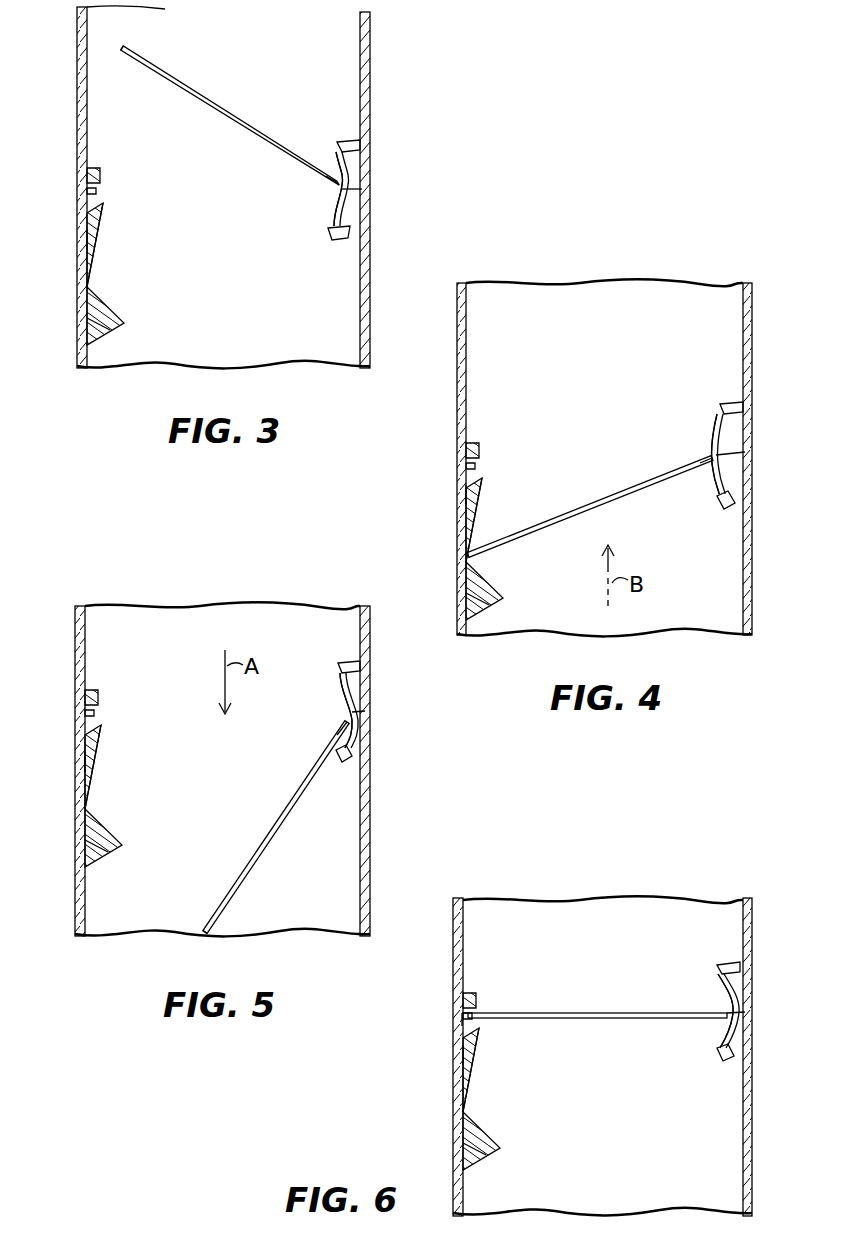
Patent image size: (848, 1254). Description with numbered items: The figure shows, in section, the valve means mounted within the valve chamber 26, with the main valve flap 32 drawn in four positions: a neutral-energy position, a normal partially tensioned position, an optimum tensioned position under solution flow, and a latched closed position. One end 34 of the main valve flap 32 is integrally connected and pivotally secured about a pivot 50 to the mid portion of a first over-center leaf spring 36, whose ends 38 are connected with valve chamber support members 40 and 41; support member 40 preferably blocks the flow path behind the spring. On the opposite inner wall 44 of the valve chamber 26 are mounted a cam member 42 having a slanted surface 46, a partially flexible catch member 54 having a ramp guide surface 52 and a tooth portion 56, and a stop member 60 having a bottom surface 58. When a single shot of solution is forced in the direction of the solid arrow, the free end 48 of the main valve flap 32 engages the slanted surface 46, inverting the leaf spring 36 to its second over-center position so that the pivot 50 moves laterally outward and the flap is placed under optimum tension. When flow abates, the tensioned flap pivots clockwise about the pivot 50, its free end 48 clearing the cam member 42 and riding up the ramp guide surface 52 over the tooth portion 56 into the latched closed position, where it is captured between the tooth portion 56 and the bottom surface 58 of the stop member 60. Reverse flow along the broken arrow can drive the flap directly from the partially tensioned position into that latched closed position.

In FIG. 3, the valve chamber 26 is at (371, 38).
In FIG. 3, the main valve flap 32 is at (217, 112).
In FIG. 4, the main valve flap 32 is at (590, 507).
In FIG. 5, the main valve flap 32 is at (270, 846).
In FIG. 6, the main valve flap 32 is at (597, 996).
In FIG. 3, the end of main valve flap 34 is at (335, 190).
In FIG. 4, the end of main valve flap 34 is at (708, 462).
In FIG. 5, the end of main valve flap 34 is at (343, 727).
In FIG. 3, the first over-center leaf spring 36 is at (345, 211).
In FIG. 4, the first over-center leaf spring 36 is at (728, 482).
In FIG. 5, the first over-center leaf spring 36 is at (355, 688).
In FIG. 6, the first over-center leaf spring 36 is at (733, 988).
In FIG. 3, the ends of leaf spring 38 is at (344, 168).
In FIG. 4, the ends of leaf spring 38 is at (716, 434).
In FIG. 5, the ends of leaf spring 38 is at (343, 693).
In FIG. 6, the ends of leaf spring 38 is at (720, 990).
In FIG. 3, the valve chamber support member 40 is at (348, 142).
In FIG. 4, the valve chamber support member 40 is at (730, 404).
In FIG. 5, the valve chamber support member 40 is at (348, 662).
In FIG. 6, the valve chamber support member 40 is at (730, 964).
In FIG. 3, the valve chamber support member 41 is at (342, 240).
In FIG. 4, the valve chamber support member 41 is at (729, 508).
In FIG. 5, the valve chamber support member 41 is at (345, 762).
In FIG. 6, the valve chamber support member 41 is at (728, 1062).
In FIG. 3, the cam member 42 is at (95, 323).
In FIG. 4, the cam member 42 is at (448, 587).
In FIG. 5, the cam member 42 is at (68, 839).
In FIG. 6, the cam member 42 is at (446, 1147).
In FIG. 3, the inner wall of valve chamber 44 is at (90, 98).
In FIG. 3, the slanted surface 46 is at (108, 303).
In FIG. 4, the slanted surface 46 is at (507, 587).
In FIG. 5, the slanted surface 46 is at (120, 833).
In FIG. 6, the slanted surface 46 is at (498, 1135).
In FIG. 3, the free end of valve flap 48 is at (150, 58).
In FIG. 4, the free end of valve flap 48 is at (478, 552).
In FIG. 5, the free end of valve flap 48 is at (214, 922).
In FIG. 6, the free end of valve flap 48 is at (498, 1019).
In FIG. 3, the pivot 50 is at (362, 189).
In FIG. 4, the pivot 50 is at (745, 452).
In FIG. 5, the pivot 50 is at (365, 711).
In FIG. 6, the pivot 50 is at (745, 1012).
In FIG. 3, the ramp guide surface 52 is at (100, 244).
In FIG. 4, the ramp guide surface 52 is at (504, 520).
In FIG. 5, the ramp guide surface 52 is at (113, 767).
In FIG. 6, the ramp guide surface 52 is at (489, 1070).
In FIG. 3, the partially flexible catch member 54 is at (90, 237).
In FIG. 4, the partially flexible catch member 54 is at (468, 492).
In FIG. 5, the partially flexible catch member 54 is at (88, 762).
In FIG. 6, the partially flexible catch member 54 is at (465, 1055).
In FIG. 3, the tooth portion 56 is at (104, 204).
In FIG. 4, the tooth portion 56 is at (499, 515).
In FIG. 5, the tooth portion 56 is at (118, 763).
In FIG. 6, the tooth portion 56 is at (490, 1070).
In FIG. 3, the bottom surface of stop member 58 is at (97, 191).
In FIG. 4, the bottom surface of stop member 58 is at (495, 453).
In FIG. 5, the bottom surface of stop member 58 is at (115, 701).
In FIG. 6, the bottom surface of stop member 58 is at (467, 1016).
In FIG. 3, the stop member 60 is at (97, 167).
In FIG. 4, the stop member 60 is at (485, 430).
In FIG. 5, the stop member 60 is at (105, 677).
In FIG. 6, the stop member 60 is at (482, 980).